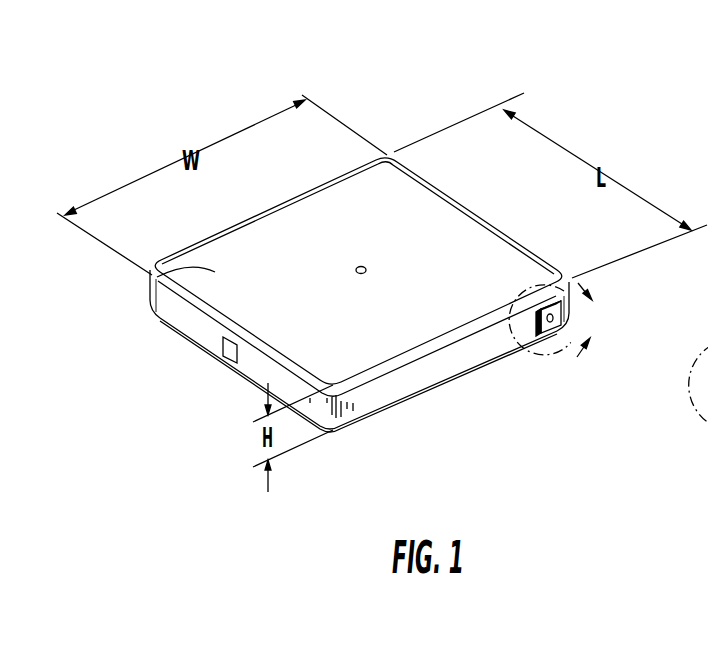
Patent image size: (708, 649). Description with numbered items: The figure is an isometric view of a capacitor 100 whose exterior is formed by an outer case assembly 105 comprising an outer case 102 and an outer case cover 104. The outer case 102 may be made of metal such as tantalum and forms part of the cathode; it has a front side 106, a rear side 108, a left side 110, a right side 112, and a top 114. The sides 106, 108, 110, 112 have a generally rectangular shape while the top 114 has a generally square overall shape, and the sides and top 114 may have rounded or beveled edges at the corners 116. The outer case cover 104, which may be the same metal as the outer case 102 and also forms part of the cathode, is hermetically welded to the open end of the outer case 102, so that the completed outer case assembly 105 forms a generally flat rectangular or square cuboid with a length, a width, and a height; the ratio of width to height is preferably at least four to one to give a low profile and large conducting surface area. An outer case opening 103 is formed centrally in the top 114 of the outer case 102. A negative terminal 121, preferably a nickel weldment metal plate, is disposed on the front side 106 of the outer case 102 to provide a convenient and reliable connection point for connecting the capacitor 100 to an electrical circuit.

The capacitor 100 is at (386, 250).
The outer case 102 is at (343, 200).
The outer case opening 103 is at (361, 267).
The outer case cover 104 is at (474, 372).
The outer case assembly 105 is at (157, 324).
The front side 106 is at (180, 317).
The rear side 108 is at (526, 242).
The left side 110 is at (416, 373).
The right side 112 is at (245, 214).
The top 114 is at (436, 208).
The corners 116 is at (343, 422).
The negative terminal 121 is at (233, 346).